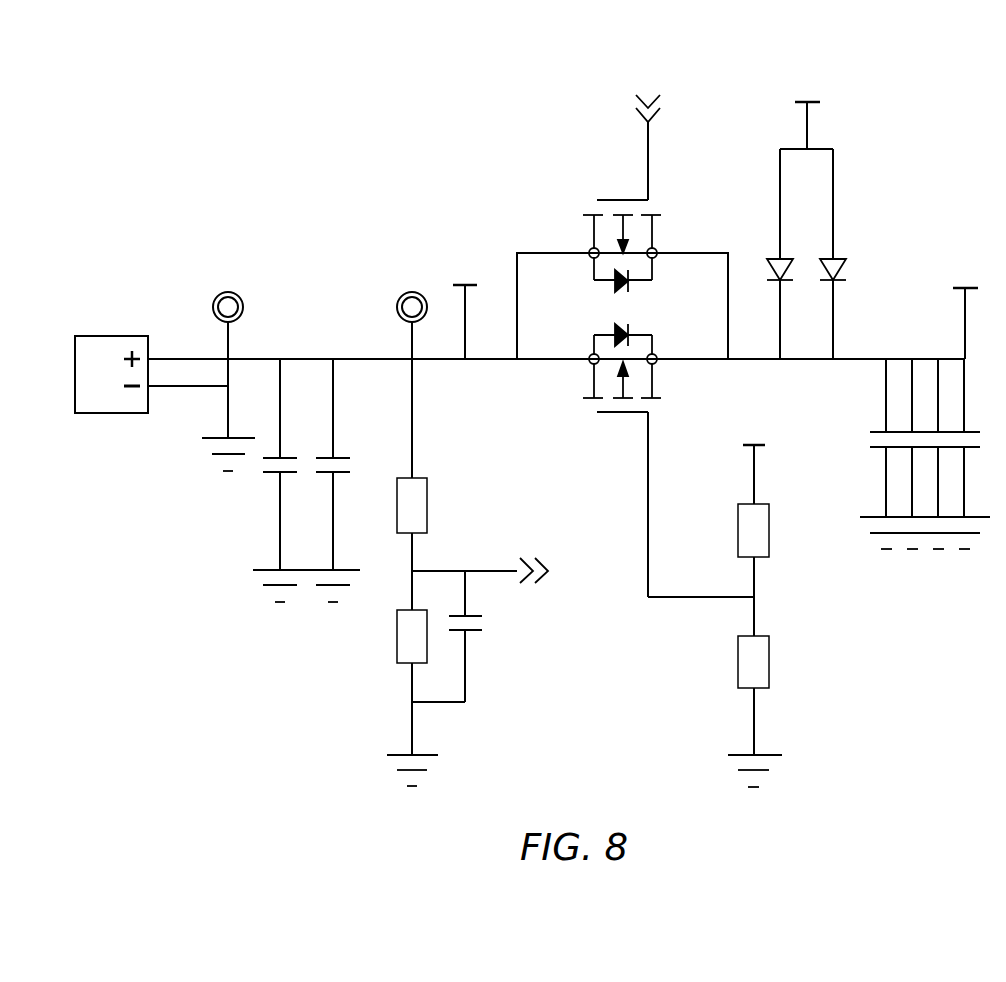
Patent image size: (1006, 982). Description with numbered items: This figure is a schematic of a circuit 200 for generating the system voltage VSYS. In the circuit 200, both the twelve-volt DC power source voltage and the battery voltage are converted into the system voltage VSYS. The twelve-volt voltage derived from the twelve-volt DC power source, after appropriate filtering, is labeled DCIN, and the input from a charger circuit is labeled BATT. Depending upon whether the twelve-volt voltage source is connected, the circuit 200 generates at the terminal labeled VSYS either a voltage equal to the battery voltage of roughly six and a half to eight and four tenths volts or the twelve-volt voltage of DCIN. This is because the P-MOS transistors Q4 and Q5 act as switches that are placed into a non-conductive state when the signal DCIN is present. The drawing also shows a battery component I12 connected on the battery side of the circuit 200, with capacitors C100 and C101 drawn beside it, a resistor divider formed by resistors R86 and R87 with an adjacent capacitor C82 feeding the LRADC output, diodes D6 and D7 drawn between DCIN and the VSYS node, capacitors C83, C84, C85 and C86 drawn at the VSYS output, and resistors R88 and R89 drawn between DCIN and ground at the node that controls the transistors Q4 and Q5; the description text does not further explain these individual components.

The circuit 200 is at (353, 165).
The battery I12 is at (118, 363).
The capacitor 100nF C100 is at (276, 464).
The capacitor 10UF 16V C101 is at (329, 464).
The resistor 340K R86 is at (399, 524).
The resistor 100K R87 is at (399, 617).
The capacitor 100nF C82 is at (469, 636).
The P-MOS transistor Q4 is at (613, 234).
The P-MOS transistor Q5 is at (599, 368).
The diode CRS08 D6 is at (781, 254).
The diode CRS08 D7 is at (834, 254).
The capacitor 22UF C83 is at (882, 438).
The capacitor 22UF C84 is at (908, 438).
The capacitor 22UF C85 is at (934, 438).
The capacitor 22UF C86 is at (960, 438).
The resistor 1K R88 is at (741, 550).
The resistor 47K R89 is at (741, 642).